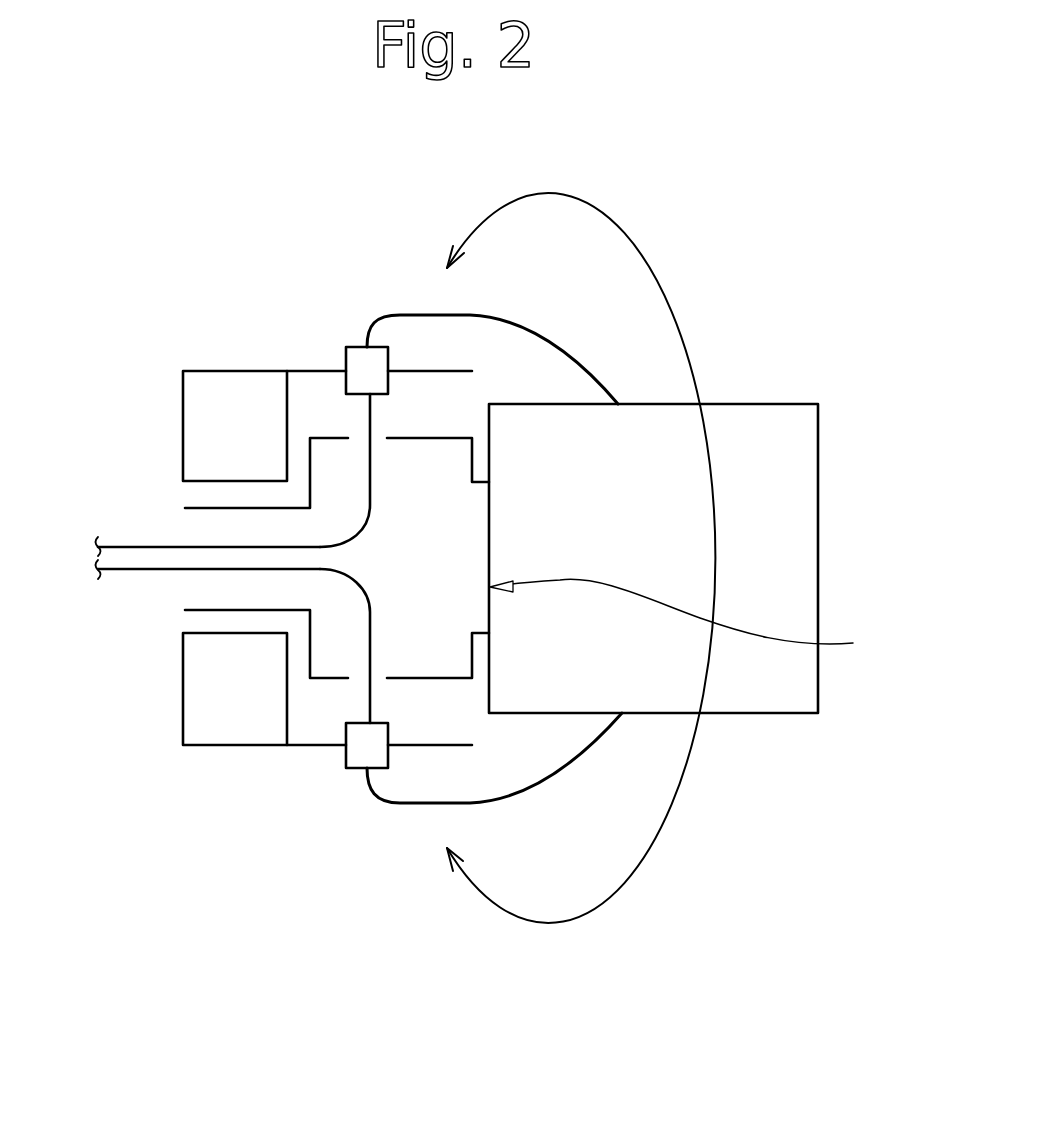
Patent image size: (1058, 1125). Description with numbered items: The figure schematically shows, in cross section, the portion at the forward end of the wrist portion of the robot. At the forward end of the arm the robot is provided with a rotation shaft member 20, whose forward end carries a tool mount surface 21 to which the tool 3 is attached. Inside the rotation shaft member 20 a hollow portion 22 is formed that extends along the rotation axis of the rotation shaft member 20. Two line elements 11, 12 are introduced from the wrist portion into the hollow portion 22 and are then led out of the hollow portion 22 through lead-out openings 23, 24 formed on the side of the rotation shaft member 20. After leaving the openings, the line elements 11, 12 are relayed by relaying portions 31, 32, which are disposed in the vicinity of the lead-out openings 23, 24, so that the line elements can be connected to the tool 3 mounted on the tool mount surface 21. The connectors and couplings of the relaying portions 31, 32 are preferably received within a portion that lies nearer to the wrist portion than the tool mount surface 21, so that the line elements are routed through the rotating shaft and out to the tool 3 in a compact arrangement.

The tool 3 is at (803, 457).
The line element 11 is at (116, 575).
The line element 12 is at (116, 542).
The rotation shaft member 20 is at (435, 580).
The tool mount surface 21 is at (690, 622).
The hollow portion 22 is at (200, 588).
The lead-out opening 23 is at (381, 685).
The lead-out opening 24 is at (383, 432).
The relaying portion 31 is at (350, 768).
The relaying portion 32 is at (350, 347).